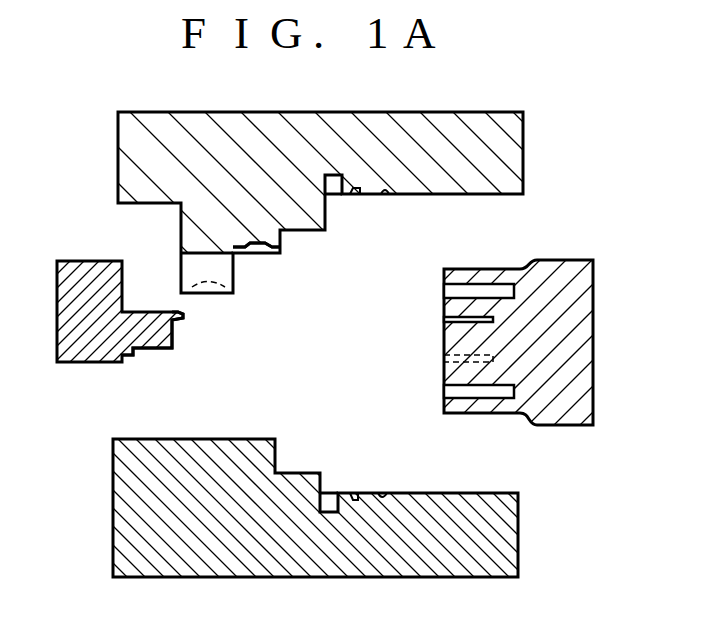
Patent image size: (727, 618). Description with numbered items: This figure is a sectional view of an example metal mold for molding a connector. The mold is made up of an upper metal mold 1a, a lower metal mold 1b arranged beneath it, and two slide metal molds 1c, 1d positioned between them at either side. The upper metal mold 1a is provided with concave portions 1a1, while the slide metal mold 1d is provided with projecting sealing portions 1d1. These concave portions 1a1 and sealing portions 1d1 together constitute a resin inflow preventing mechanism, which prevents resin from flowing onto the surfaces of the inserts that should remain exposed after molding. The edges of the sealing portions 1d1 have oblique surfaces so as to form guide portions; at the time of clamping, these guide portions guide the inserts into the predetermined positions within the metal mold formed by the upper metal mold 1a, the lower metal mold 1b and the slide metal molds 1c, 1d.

The upper metal mold 1a is at (518, 163).
The lower metal mold 1b is at (505, 538).
The slide metal mold 1c is at (583, 365).
The slide metal mold 1d is at (85, 268).
The concave portions 1a1 is at (252, 250).
The projecting sealing portions 1d1 is at (192, 314).